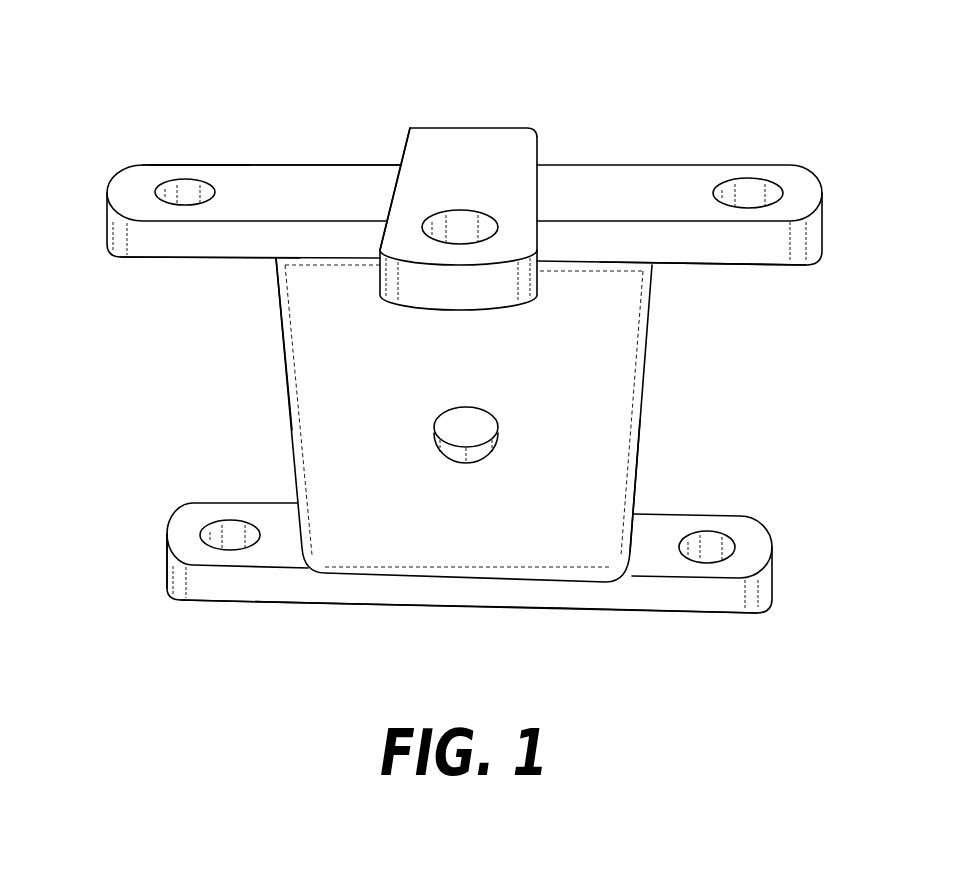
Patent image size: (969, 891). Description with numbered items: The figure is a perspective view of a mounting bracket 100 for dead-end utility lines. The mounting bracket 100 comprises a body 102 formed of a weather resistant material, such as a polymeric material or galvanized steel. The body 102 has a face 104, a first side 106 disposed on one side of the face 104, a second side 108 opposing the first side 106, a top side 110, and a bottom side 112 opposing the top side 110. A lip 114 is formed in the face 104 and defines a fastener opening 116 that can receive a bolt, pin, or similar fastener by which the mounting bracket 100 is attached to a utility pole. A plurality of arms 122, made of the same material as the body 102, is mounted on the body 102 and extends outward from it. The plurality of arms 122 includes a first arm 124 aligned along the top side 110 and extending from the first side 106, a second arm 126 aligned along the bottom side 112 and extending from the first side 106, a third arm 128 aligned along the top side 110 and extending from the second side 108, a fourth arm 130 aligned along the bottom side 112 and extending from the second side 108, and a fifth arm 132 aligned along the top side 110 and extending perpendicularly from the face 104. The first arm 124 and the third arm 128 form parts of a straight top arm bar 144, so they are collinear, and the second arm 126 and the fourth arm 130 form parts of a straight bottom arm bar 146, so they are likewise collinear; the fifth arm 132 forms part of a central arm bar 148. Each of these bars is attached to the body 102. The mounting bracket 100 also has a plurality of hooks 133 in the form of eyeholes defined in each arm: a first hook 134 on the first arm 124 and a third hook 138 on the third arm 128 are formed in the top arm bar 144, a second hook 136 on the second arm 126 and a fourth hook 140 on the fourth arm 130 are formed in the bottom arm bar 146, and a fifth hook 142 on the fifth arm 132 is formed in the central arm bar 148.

The mounting bracket 100 is at (448, 340).
The body 102 is at (448, 363).
The face 104 is at (475, 420).
The first side 106 is at (291, 405).
The second side 108 is at (635, 492).
The top side 110 is at (478, 199).
The bottom side 112 is at (416, 563).
The lip 114 is at (486, 418).
The fastener opening 116 is at (474, 435).
The plurality of arms 122 is at (231, 122).
The first arm 124 is at (215, 260).
The second arm 126 is at (300, 605).
The third arm 128 is at (680, 267).
The fourth arm 130 is at (633, 612).
The fifth arm 132 is at (407, 207).
The plurality of hooks 133 is at (140, 572).
The first hook 134 is at (170, 183).
The second hook 136 is at (215, 528).
The third hook 138 is at (773, 190).
The fourth hook 140 is at (714, 540).
The fifth hook 142 is at (472, 224).
The top arm bar 144 is at (332, 177).
The bottom arm bar 146 is at (505, 609).
The central arm bar 148 is at (432, 177).